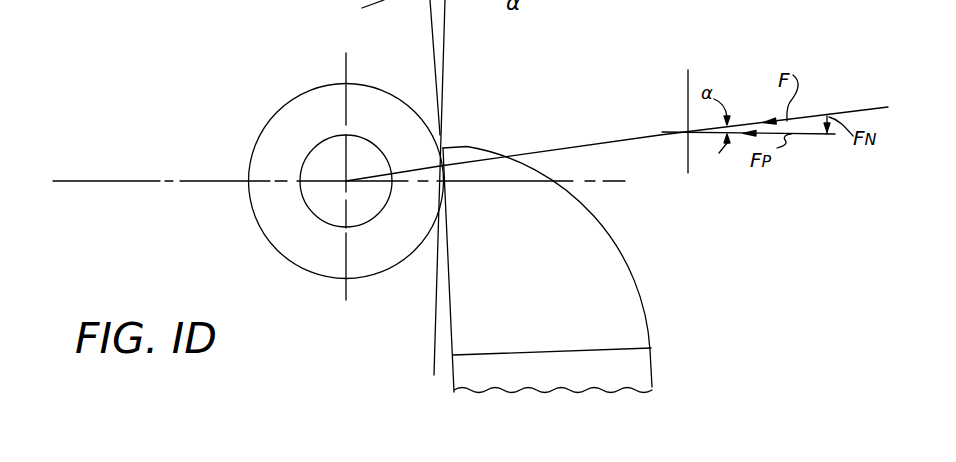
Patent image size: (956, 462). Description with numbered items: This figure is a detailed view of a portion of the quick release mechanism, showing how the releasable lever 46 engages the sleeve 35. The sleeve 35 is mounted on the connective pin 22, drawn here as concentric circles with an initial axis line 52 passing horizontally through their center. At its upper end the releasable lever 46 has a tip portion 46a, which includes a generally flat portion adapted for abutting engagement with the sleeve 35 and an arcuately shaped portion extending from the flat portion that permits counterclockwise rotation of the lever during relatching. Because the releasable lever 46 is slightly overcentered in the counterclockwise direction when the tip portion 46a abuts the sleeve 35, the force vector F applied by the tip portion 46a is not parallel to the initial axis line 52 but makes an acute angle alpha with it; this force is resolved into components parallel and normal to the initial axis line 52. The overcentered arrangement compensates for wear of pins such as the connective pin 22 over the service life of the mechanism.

The initial axis line 52 is at (73, 178).
The sleeve 35 is at (296, 96).
The connective pin 22 is at (300, 200).
The releasable lever 46 is at (652, 365).
The tip portion 46a is at (450, 304).